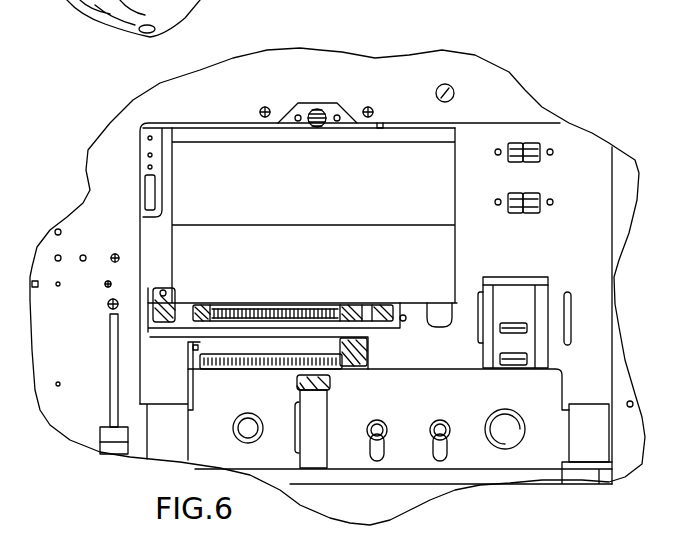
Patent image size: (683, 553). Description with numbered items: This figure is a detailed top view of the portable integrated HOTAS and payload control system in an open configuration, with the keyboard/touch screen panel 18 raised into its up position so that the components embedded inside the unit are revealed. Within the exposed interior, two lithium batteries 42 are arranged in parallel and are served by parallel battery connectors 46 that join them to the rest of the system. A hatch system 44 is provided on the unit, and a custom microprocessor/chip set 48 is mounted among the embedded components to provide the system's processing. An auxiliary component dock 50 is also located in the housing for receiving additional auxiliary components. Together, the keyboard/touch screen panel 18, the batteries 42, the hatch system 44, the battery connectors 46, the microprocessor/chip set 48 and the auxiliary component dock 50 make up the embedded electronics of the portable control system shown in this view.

The keyboard/touch screen panel 18 is at (400, 451).
The parallel lithium batteries 42 is at (288, 291).
The hatch system 44 is at (325, 104).
The parallel battery connectors 46 is at (358, 177).
The custom microprocessor/chip set 48 is at (252, 328).
The auxiliary component dock 50 is at (555, 313).